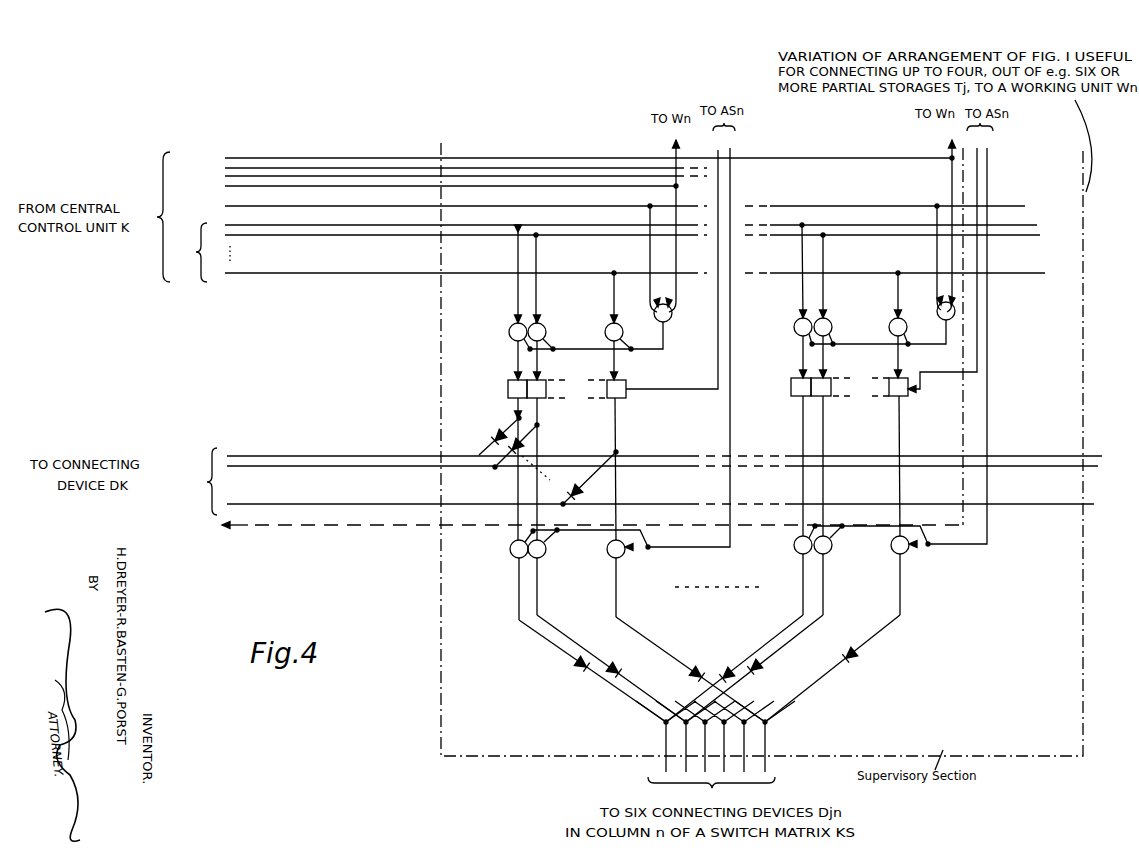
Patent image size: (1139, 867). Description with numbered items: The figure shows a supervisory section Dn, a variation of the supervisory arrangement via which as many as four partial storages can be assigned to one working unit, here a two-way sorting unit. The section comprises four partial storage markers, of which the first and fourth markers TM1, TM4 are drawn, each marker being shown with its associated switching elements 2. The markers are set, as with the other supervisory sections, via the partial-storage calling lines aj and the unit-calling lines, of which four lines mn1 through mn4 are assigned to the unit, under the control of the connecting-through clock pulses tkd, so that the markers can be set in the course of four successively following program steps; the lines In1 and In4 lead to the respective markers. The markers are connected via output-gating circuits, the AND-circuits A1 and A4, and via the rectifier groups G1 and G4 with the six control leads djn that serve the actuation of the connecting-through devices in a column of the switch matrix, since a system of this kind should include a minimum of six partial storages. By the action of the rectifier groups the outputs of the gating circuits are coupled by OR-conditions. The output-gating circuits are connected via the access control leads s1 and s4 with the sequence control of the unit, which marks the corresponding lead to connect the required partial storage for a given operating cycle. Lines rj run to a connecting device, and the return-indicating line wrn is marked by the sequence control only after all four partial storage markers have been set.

The unit-calling line mn4 is at (948, 150).
The unit-calling line mn1 is at (672, 151).
The connecting-through clock pulses tkd is at (608, 256).
The partial-storage calling lines aj is at (611, 252).
The lines rj to connecting device DK rj is at (642, 481).
The return-indicating line wrn is at (570, 341).
The access control lead s1 is at (635, 341).
The access control lead s4 is at (905, 340).
The line In1 is at (718, 190).
The line In4 is at (977, 187).
The partial storage marker TM1 is at (508, 380).
The partial storage marker TM4 is at (866, 390).
The output-gating circuit A1 is at (553, 543).
The output-gating circuit A4 is at (831, 539).
The rectifier group G1 is at (602, 668).
The rectifier group G4 is at (832, 668).
The control leads djn is at (715, 751).
The supervisory section Dn is at (1020, 743).
The two-state switching elements 2 is at (732, 323).